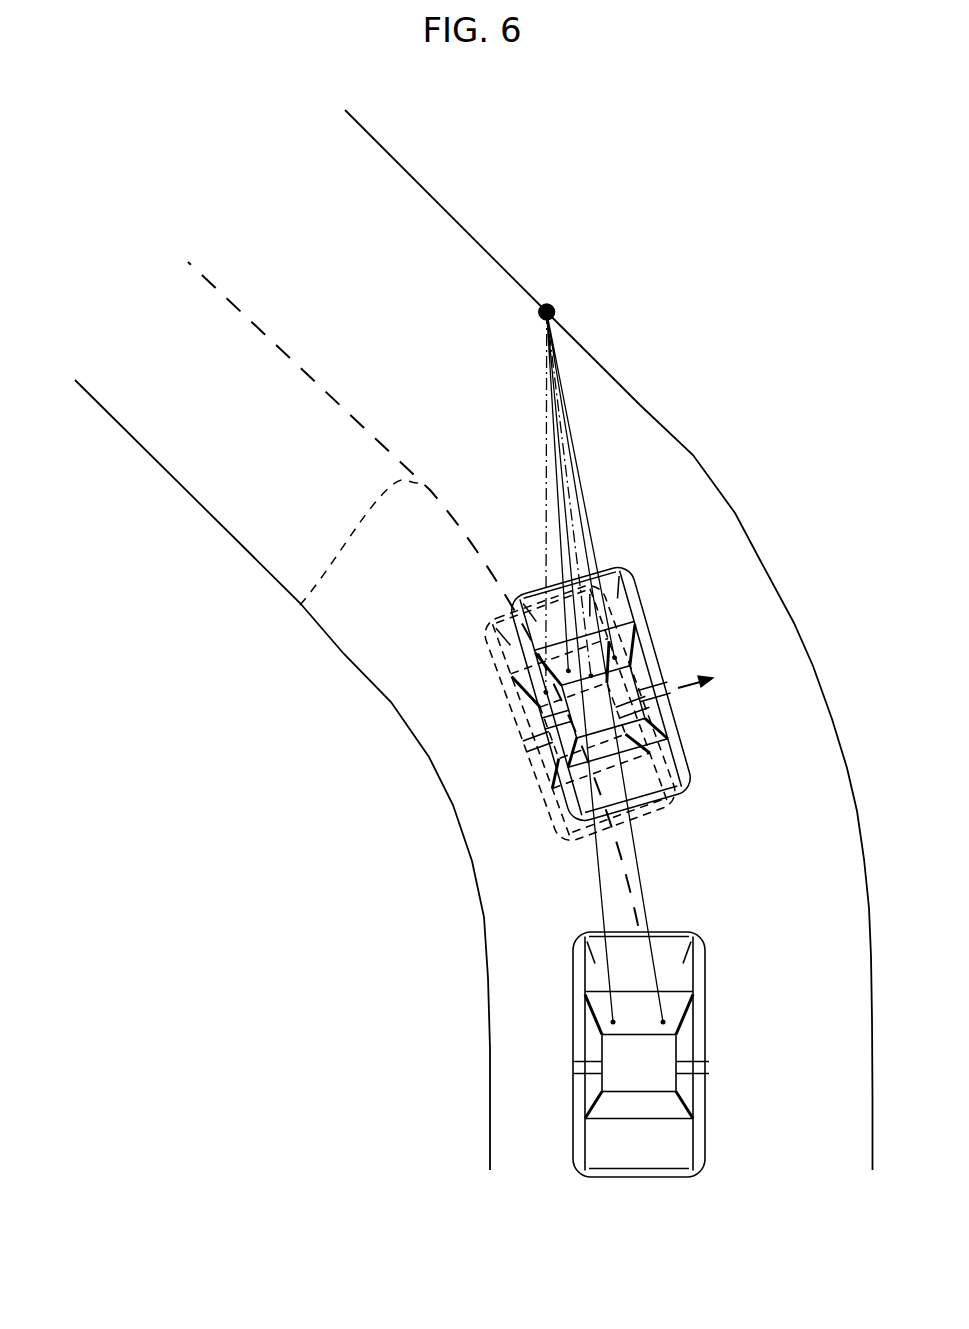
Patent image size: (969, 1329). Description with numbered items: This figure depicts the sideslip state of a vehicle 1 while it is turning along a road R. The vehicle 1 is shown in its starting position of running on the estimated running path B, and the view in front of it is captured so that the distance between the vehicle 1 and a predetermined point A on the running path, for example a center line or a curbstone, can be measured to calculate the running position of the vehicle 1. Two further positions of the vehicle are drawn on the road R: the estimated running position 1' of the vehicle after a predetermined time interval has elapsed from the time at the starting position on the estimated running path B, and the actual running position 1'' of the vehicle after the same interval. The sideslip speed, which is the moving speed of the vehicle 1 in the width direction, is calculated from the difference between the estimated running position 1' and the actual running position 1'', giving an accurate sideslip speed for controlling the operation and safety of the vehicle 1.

The vehicle 1 is at (574, 1054).
The estimated running position 1' is at (546, 713).
The actual running position 1'' is at (677, 693).
The predetermined point A is at (556, 310).
The estimated running path B is at (342, 554).
The road R is at (412, 699).